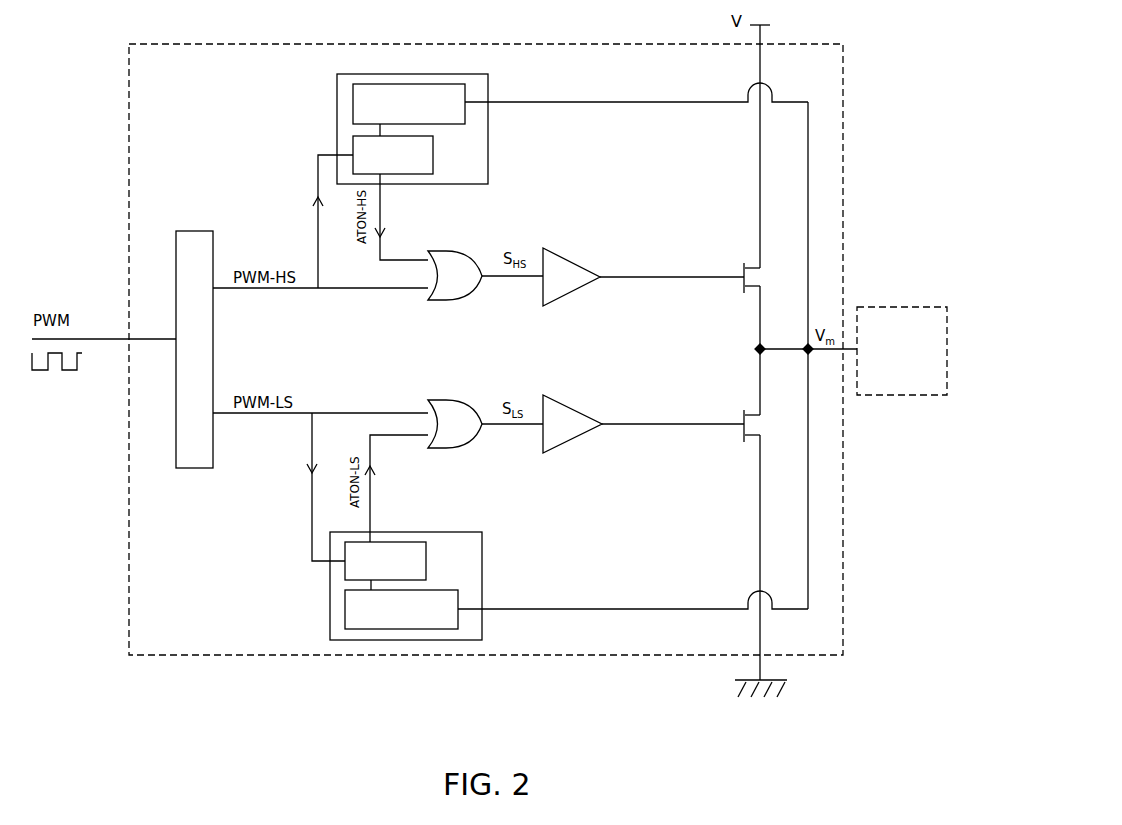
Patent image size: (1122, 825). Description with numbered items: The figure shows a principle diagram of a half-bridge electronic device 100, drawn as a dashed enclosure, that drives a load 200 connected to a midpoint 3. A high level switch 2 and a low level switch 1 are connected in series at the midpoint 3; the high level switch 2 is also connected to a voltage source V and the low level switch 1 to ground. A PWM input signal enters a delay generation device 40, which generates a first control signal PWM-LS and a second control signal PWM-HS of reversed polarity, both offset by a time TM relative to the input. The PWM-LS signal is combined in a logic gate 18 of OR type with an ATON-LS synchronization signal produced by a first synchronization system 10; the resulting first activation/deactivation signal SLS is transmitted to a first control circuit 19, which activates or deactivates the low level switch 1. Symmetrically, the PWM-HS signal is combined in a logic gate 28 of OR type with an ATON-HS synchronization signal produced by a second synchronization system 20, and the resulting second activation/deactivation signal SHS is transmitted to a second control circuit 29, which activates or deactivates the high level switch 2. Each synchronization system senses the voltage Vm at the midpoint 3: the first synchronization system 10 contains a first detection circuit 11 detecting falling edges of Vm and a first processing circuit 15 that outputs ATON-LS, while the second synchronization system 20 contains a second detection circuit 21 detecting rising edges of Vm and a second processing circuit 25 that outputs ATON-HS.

The half-bridge electronic device 100 is at (128, 531).
The load 200 is at (913, 307).
The delay generation device 40 is at (193, 230).
The second synchronization system 20 is at (378, 125).
The second detection circuit 21 is at (409, 104).
The second processing circuit 25 is at (393, 155).
The logic gate of OR type 28 is at (455, 250).
The second control circuit 29 is at (562, 258).
The high level switch 2 is at (736, 266).
The midpoint 3 is at (744, 347).
The low level switch 1 is at (734, 407).
The logic gate of OR type 18 is at (447, 398).
The first control circuit 19 is at (545, 393).
The first synchronization system 10 is at (370, 586).
The first processing circuit 15 is at (385, 561).
The first detection circuit 11 is at (401, 609).